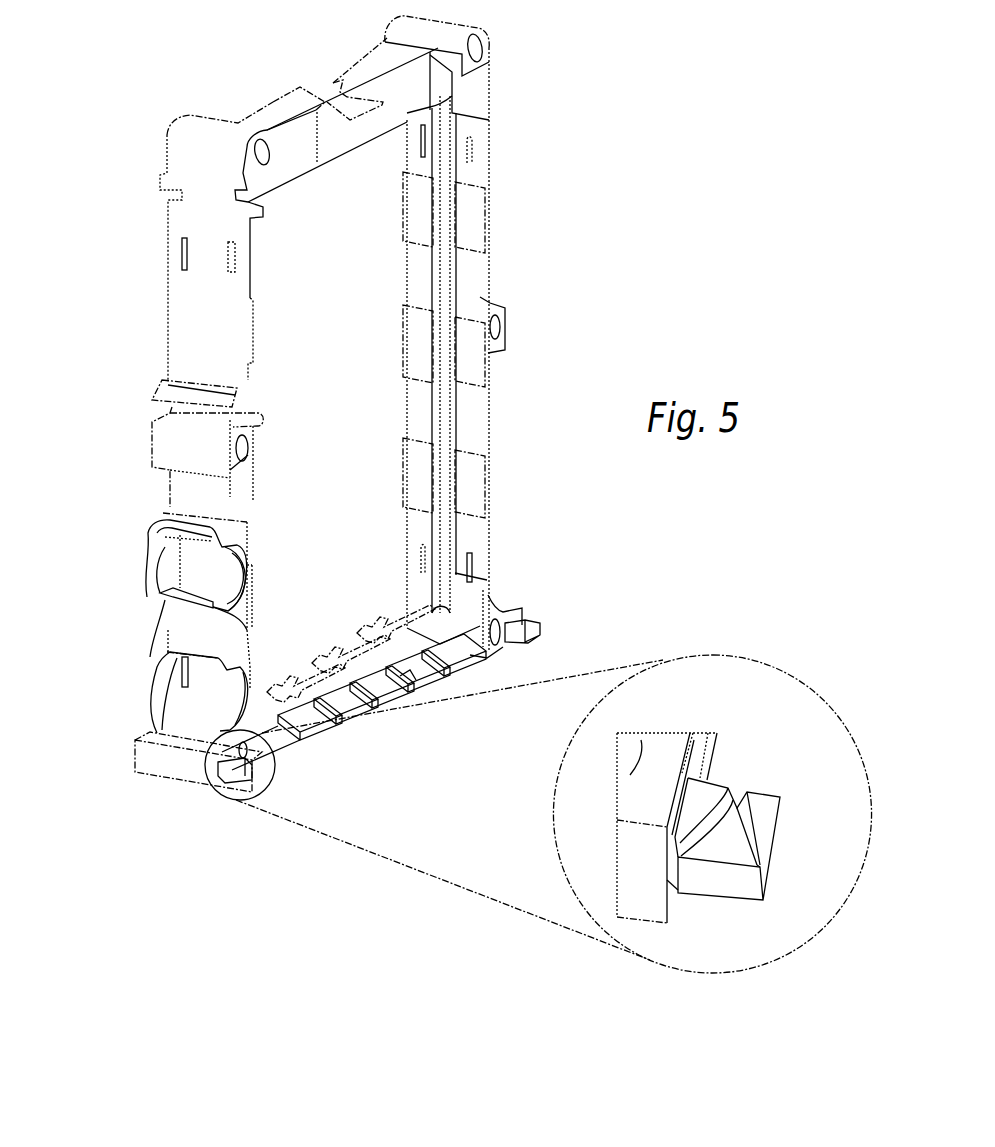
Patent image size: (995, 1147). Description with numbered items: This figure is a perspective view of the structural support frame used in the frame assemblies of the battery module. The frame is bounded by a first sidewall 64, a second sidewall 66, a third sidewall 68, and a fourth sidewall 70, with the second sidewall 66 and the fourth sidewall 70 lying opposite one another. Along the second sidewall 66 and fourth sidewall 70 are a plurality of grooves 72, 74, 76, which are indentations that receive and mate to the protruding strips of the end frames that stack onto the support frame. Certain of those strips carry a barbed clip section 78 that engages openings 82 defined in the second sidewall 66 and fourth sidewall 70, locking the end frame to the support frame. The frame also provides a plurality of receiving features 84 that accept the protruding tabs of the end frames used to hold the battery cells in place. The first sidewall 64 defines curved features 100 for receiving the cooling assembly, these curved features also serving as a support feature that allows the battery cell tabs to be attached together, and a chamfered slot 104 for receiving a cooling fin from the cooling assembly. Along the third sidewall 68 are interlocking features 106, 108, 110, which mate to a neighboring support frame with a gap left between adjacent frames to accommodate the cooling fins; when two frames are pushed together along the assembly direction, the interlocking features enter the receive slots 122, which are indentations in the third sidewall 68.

The first sidewall 64 is at (257, 93).
The second sidewall 66 is at (496, 276).
The third sidewall 68 is at (501, 729).
The fourth sidewall 70 is at (150, 445).
The groove 72 is at (472, 163).
The groove 74 is at (483, 297).
The groove 76 is at (480, 425).
The barbed clip section 78 is at (480, 540).
The openings 82 is at (425, 147).
The receiving features 84 is at (470, 662).
The curved features 100 is at (378, 72).
The chamfered slot 104 is at (265, 775).
The interlocking feature 106 is at (316, 735).
The interlocking feature 108 is at (395, 694).
The interlocking feature 110 is at (450, 685).
The receive slots 122 is at (430, 658).